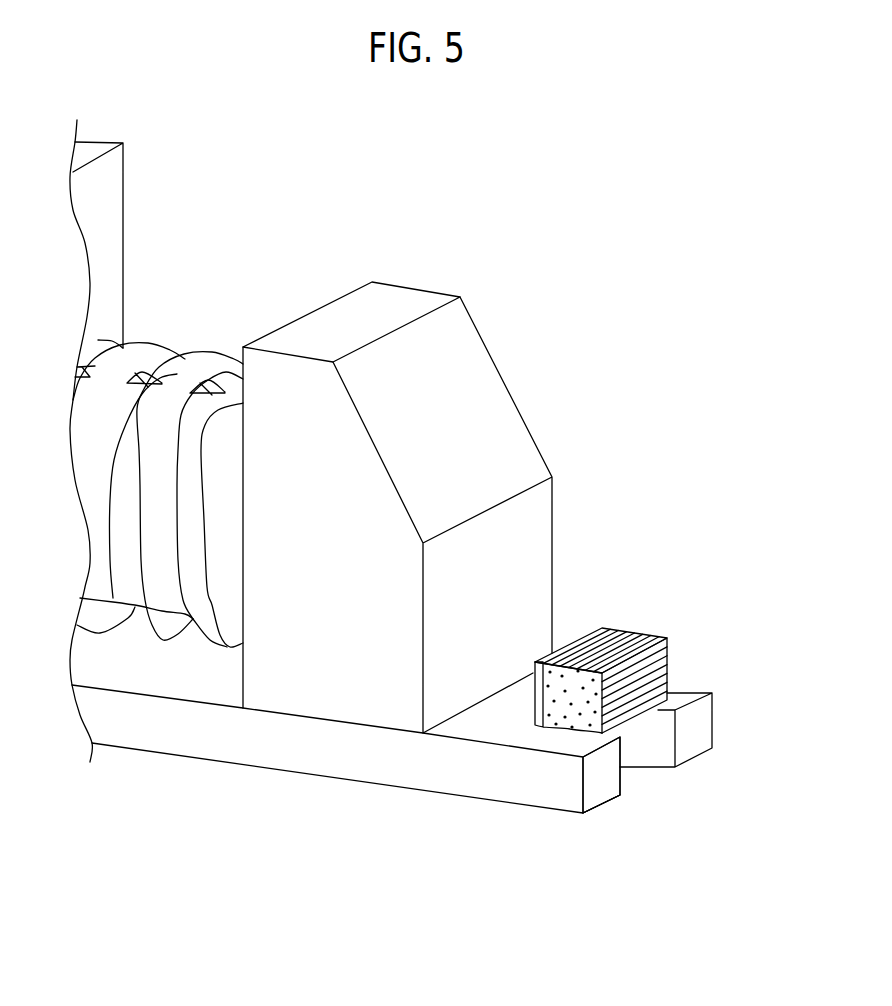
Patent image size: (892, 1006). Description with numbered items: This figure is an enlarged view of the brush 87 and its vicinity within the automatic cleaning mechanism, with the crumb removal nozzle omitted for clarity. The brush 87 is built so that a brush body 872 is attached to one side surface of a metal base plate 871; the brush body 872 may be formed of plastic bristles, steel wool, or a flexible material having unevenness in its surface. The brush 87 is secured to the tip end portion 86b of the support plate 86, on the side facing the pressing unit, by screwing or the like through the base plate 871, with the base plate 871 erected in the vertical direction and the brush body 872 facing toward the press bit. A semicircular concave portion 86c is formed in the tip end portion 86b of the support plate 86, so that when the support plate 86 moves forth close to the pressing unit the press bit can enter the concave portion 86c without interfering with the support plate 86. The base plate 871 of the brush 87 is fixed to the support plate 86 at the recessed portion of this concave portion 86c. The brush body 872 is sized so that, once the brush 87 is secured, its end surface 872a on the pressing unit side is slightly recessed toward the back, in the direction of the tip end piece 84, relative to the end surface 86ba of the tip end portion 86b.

The tip end piece 84 is at (421, 298).
The support plate 86 is at (402, 799).
The tip end portion 86b is at (523, 808).
The end surface 86ba is at (597, 790).
The concave portion 86c is at (660, 753).
The brush 87 is at (667, 624).
The base plate 871 is at (586, 632).
The brush body 872 is at (667, 644).
The end surface 872a is at (668, 664).